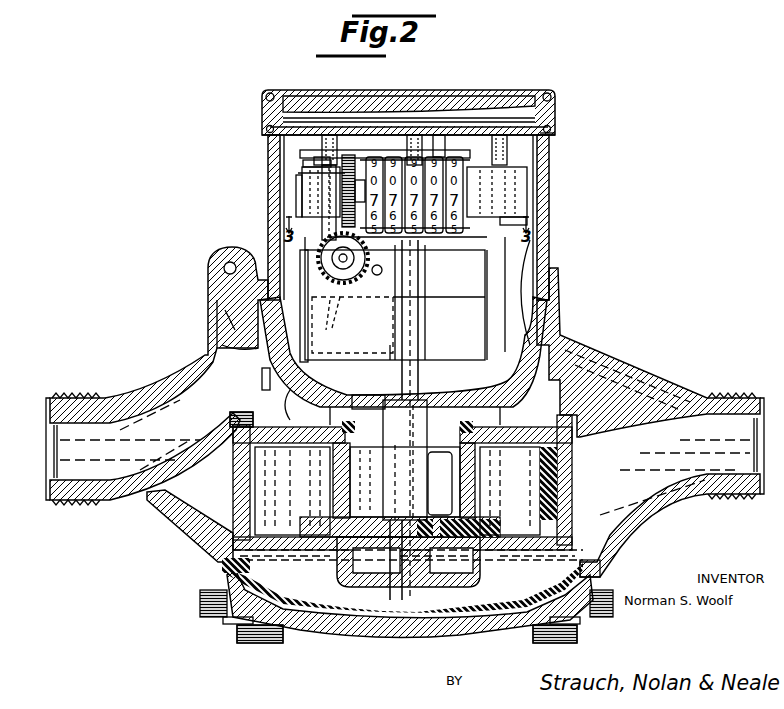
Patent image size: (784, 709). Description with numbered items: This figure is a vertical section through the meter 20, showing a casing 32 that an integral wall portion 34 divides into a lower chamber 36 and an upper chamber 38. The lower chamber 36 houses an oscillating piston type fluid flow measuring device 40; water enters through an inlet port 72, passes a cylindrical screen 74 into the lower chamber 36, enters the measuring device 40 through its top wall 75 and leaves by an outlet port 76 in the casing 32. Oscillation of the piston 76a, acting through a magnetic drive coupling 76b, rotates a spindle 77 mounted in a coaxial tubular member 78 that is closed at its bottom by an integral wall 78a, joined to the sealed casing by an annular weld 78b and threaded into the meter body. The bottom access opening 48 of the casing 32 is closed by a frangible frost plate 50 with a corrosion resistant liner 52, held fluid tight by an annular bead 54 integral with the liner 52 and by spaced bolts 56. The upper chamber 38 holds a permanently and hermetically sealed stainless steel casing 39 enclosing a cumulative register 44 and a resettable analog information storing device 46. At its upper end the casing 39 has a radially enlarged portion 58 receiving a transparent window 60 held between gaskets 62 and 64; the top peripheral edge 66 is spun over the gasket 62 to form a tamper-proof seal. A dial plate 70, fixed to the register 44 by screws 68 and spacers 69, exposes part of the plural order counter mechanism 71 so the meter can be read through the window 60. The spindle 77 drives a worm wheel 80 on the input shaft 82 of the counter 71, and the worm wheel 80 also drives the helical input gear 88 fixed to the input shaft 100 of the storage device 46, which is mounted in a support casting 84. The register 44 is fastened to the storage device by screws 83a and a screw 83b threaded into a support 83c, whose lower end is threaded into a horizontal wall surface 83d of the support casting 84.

The meter 20 is at (253, 231).
The casing 32 is at (657, 515).
The integral wall portion 34 is at (510, 491).
The lower chamber 36 is at (614, 370).
The upper chamber 38 is at (514, 285).
The permanently and hermetically sealed casing 39 is at (550, 190).
The fluid flow measuring device 40 is at (263, 404).
The cumulative type register 44 is at (294, 192).
The information storing device 46 is at (298, 263).
The bottom access opening 48 is at (222, 580).
The frangible frost plate 50 is at (400, 632).
The corrosion resistant liner 52 is at (510, 587).
The annular bead 54 is at (600, 568).
The bolts 56 is at (280, 645).
The radially enlarged portion 58 is at (557, 105).
The transparent window 60 is at (452, 92).
The gasket 62 is at (556, 100).
The gasket 64 is at (556, 128).
The top peripheral edge 66 is at (549, 92).
The screws 68 is at (328, 132).
The spacers 69 is at (314, 161).
The dial plate 70 is at (410, 132).
The plural order counter mechanism 71 is at (448, 156).
The inlet port 72 is at (52, 418).
The cylindrical screen 74 is at (262, 383).
The top wall 75 is at (272, 455).
The outlet port 76 is at (754, 410).
The piston 76a is at (540, 487).
The magnetic drive coupling 76b is at (392, 492).
The spindle 77 is at (420, 340).
The tubular member 78 is at (392, 460).
The integral wall 78a is at (385, 535).
The annular weld 78b is at (358, 395).
The worm wheel 80 is at (335, 158).
The input shaft 82 is at (352, 182).
The screws 83a is at (505, 168).
The screw 83b is at (305, 170).
The support 83c is at (321, 192).
The horizontal wall surface 83d is at (352, 325).
The support casting 84 is at (395, 298).
The helical gear 88 is at (352, 280).
The input shaft 100 is at (355, 268).